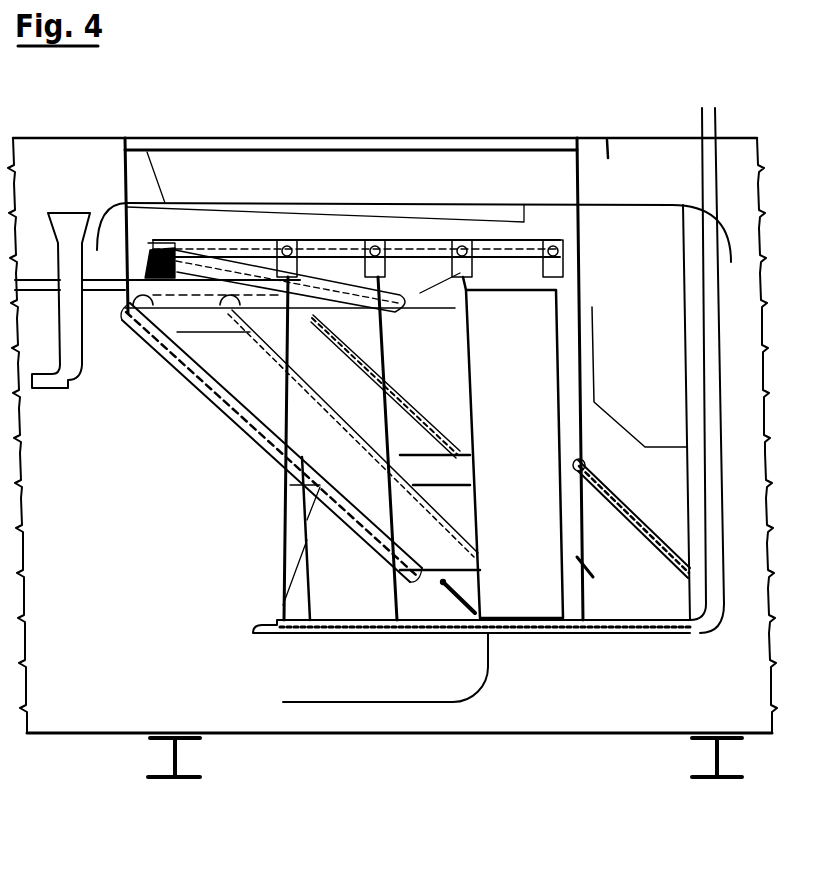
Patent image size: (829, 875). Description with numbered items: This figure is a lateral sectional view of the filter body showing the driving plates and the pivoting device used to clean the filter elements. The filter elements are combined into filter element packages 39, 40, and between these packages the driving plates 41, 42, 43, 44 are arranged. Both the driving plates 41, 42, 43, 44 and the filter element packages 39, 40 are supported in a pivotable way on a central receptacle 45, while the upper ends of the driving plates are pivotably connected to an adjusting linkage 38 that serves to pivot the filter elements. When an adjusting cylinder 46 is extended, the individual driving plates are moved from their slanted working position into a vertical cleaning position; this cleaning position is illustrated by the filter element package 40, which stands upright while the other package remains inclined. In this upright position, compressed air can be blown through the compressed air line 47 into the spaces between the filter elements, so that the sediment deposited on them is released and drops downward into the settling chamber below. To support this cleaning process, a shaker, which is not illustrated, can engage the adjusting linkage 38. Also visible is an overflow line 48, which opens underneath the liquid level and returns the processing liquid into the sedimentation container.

The adjusting linkage 38 is at (393, 293).
The filter element package 39 is at (428, 572).
The filter element package 40 is at (510, 290).
The driving plate 41 is at (255, 415).
The driving plate 42 is at (270, 630).
The driving plate 43 is at (420, 407).
The driving plate 44 is at (650, 543).
The central receptacle 45 is at (430, 470).
The adjusting cylinder 46 is at (250, 247).
The compressed air line 47 is at (588, 612).
The overflow line 48 is at (73, 332).